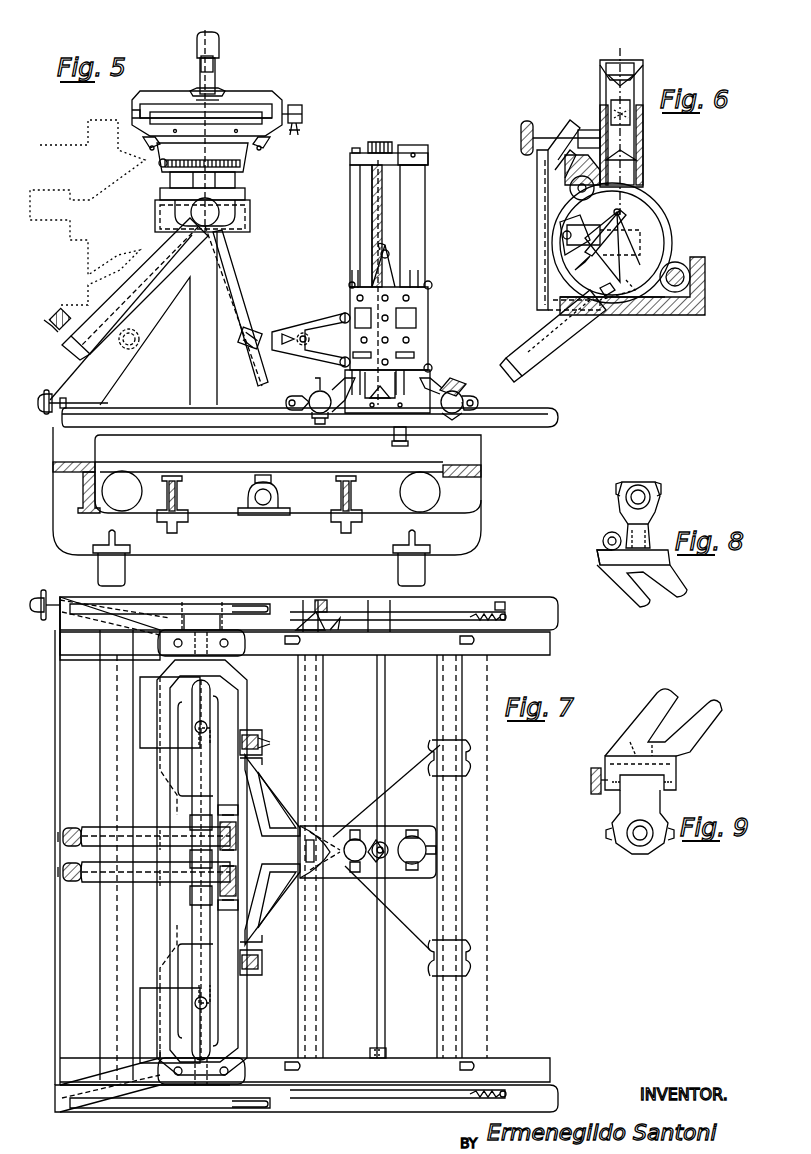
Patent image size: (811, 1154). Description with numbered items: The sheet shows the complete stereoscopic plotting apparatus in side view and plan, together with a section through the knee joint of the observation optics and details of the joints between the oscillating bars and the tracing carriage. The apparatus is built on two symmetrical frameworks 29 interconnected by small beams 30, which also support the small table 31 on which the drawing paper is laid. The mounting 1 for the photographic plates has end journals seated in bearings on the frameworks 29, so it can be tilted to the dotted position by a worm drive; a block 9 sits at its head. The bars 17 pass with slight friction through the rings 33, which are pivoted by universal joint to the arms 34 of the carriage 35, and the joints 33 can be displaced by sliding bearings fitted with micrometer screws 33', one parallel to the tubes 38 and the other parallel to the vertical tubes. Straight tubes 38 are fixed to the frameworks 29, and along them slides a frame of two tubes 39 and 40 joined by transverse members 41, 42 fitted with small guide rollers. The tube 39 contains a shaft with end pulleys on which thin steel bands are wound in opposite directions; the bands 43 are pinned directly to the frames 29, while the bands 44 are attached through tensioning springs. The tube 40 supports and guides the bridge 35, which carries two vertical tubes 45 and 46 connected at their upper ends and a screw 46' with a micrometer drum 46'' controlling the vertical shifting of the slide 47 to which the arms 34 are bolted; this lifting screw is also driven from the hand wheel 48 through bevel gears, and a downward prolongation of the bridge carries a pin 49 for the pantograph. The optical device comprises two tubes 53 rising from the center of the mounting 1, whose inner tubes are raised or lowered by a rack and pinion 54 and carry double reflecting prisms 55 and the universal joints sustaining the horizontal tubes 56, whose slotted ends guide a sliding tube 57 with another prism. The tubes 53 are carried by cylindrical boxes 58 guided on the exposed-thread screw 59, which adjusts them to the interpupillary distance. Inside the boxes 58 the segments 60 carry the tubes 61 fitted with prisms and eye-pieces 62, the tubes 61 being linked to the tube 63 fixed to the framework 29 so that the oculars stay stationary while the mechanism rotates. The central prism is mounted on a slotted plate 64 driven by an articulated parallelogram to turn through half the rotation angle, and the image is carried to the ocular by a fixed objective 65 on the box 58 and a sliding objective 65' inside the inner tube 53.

In FIG. 5, the mounting 1 is at (254, 212).
In FIG. 6, the mounting 1 is at (648, 308).
In FIG. 7, the mounting 1 is at (189, 870).
In FIG. 5, the plotting head block 9 is at (202, 156).
In FIG. 5, the bars 17 is at (228, 283).
In FIG. 5, the frameworks 29 is at (200, 330).
In FIG. 7, the frameworks 29 is at (525, 607).
In FIG. 5, the small beams 30 is at (178, 495).
In FIG. 5, the small table 31 is at (284, 472).
In FIG. 5, the rings 33 is at (245, 343).
In FIG. 7, the rings 33 is at (259, 853).
In FIG. 8, the rings 33 is at (642, 503).
In FIG. 9, the rings 33 is at (640, 832).
In FIG. 8, the micrometer screws 33' is at (634, 561).
In FIG. 9, the micrometer screws 33' is at (642, 742).
In FIG. 5, the arms 34 is at (306, 328).
In FIG. 7, the arms 34 is at (272, 800).
In FIG. 5, the carriage 35 is at (449, 382).
In FIG. 7, the carriage 35 is at (381, 852).
In FIG. 5, the tubes 38 is at (528, 422).
In FIG. 7, the tubes 38 is at (520, 1088).
In FIG. 5, the tube 39 is at (320, 399).
In FIG. 7, the tube 39 is at (316, 714).
In FIG. 5, the tube 40 is at (451, 396).
In FIG. 7, the tube 40 is at (449, 856).
In FIG. 7, the transverse member 41 is at (416, 644).
In FIG. 7, the transverse member 42 is at (380, 1070).
In FIG. 7, the bands 43 is at (270, 605).
In FIG. 7, the bands 44 is at (440, 617).
In FIG. 5, the vertical tube 45 is at (418, 216).
In FIG. 7, the vertical tube 45 is at (412, 868).
In FIG. 5, the vertical tube 46 is at (343, 226).
In FIG. 7, the vertical tube 46 is at (386, 847).
In FIG. 5, the screw 46' is at (352, 282).
In FIG. 5, the micrometer drum 46'' is at (377, 132).
In FIG. 5, the slide 47 is at (420, 328).
In FIG. 5, the hand wheel 48 is at (65, 403).
In FIG. 7, the hand wheel 48 is at (40, 596).
In FIG. 5, the pin 49 is at (394, 434).
In FIG. 6, the tubes 53 is at (642, 138).
In FIG. 6, the rack and pinion 54 is at (522, 138).
In FIG. 5, the double reflecting prisms 55 is at (210, 48).
In FIG. 7, the horizontal tubes 56 is at (198, 787).
In FIG. 5, the sliding tube 57 is at (212, 86).
In FIG. 7, the cylindrical boxes 58 is at (180, 838).
In FIG. 6, the screw 59 is at (683, 258).
In FIG. 7, the screw 59 is at (238, 840).
In FIG. 6, the segments 60 is at (630, 283).
In FIG. 5, the tubes 61 is at (123, 290).
In FIG. 6, the tubes 61 is at (573, 336).
In FIG. 7, the tubes 61 is at (112, 832).
In FIG. 5, the eye-pieces 62 is at (56, 314).
In FIG. 7, the eye-pieces 62 is at (62, 840).
In FIG. 5, the tube 63 is at (132, 333).
In FIG. 6, the plate 64 is at (636, 233).
In FIG. 6, the objective 65 is at (620, 177).
In FIG. 6, the objective 65' is at (596, 69).